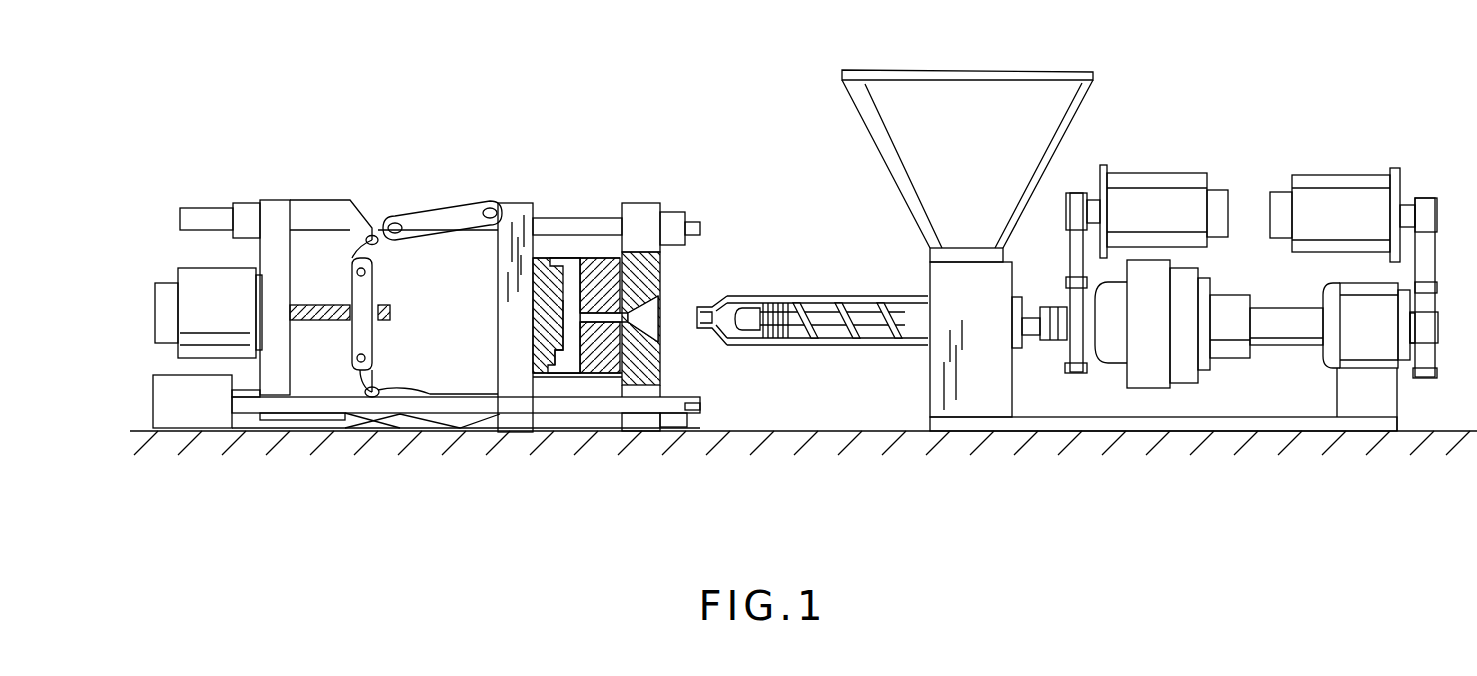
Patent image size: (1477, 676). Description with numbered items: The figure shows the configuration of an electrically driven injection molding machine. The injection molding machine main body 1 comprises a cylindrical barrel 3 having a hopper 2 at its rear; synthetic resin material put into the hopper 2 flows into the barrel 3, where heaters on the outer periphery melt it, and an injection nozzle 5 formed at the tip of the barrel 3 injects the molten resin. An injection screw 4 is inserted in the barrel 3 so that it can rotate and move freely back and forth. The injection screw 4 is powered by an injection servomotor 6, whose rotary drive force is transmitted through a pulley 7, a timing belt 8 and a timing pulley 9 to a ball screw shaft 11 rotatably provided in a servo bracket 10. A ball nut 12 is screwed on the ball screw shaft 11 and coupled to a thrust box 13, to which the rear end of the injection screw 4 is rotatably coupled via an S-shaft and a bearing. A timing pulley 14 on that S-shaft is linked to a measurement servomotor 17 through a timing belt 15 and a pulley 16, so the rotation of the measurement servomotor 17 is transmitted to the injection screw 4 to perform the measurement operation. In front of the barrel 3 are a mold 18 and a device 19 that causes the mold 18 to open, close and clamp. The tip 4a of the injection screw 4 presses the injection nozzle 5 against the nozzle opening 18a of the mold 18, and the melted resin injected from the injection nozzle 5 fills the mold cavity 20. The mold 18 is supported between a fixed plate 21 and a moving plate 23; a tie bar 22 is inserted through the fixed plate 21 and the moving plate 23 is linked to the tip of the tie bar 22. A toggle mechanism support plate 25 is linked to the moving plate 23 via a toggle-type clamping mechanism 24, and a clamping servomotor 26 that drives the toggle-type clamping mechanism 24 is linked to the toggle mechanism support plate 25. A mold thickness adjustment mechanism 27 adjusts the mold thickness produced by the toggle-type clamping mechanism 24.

The injection molding machine main body 1 is at (799, 214).
The hopper 2 is at (965, 68).
The cylindrical barrel 3 is at (856, 292).
The injection screw 4 is at (876, 327).
The tip of the injection screw 4a is at (750, 314).
The injection nozzle 5 is at (712, 333).
The injection servomotor 6 is at (1340, 177).
The pulley 7 is at (1437, 218).
The timing belt 8 is at (1430, 264).
The timing pulley 9 is at (1439, 329).
The servo bracket 10 is at (1380, 367).
The ball screw shaft 11 is at (1293, 344).
The ball nut 12 is at (1233, 296).
The thrust box 13 is at (1153, 386).
The timing pulley 14 is at (1058, 345).
The timing belt 15 is at (1068, 249).
The pulley 16 is at (1085, 195).
The measurement servomotor 17 is at (1155, 174).
The mold 18 is at (600, 385).
The nozzle opening 18a is at (632, 316).
The mold open/close and clamping device 19 is at (585, 190).
The mold cavity 20 is at (570, 372).
The fixed plate 21 is at (645, 210).
The tie bar 22 is at (553, 217).
The moving plate 23 is at (506, 205).
The toggle-type clamping mechanism 24 is at (393, 222).
The toggle mechanism support plate 25 is at (290, 205).
The clamping servomotor 26 is at (185, 272).
The mold thickness adjustment mechanism 27 is at (200, 424).